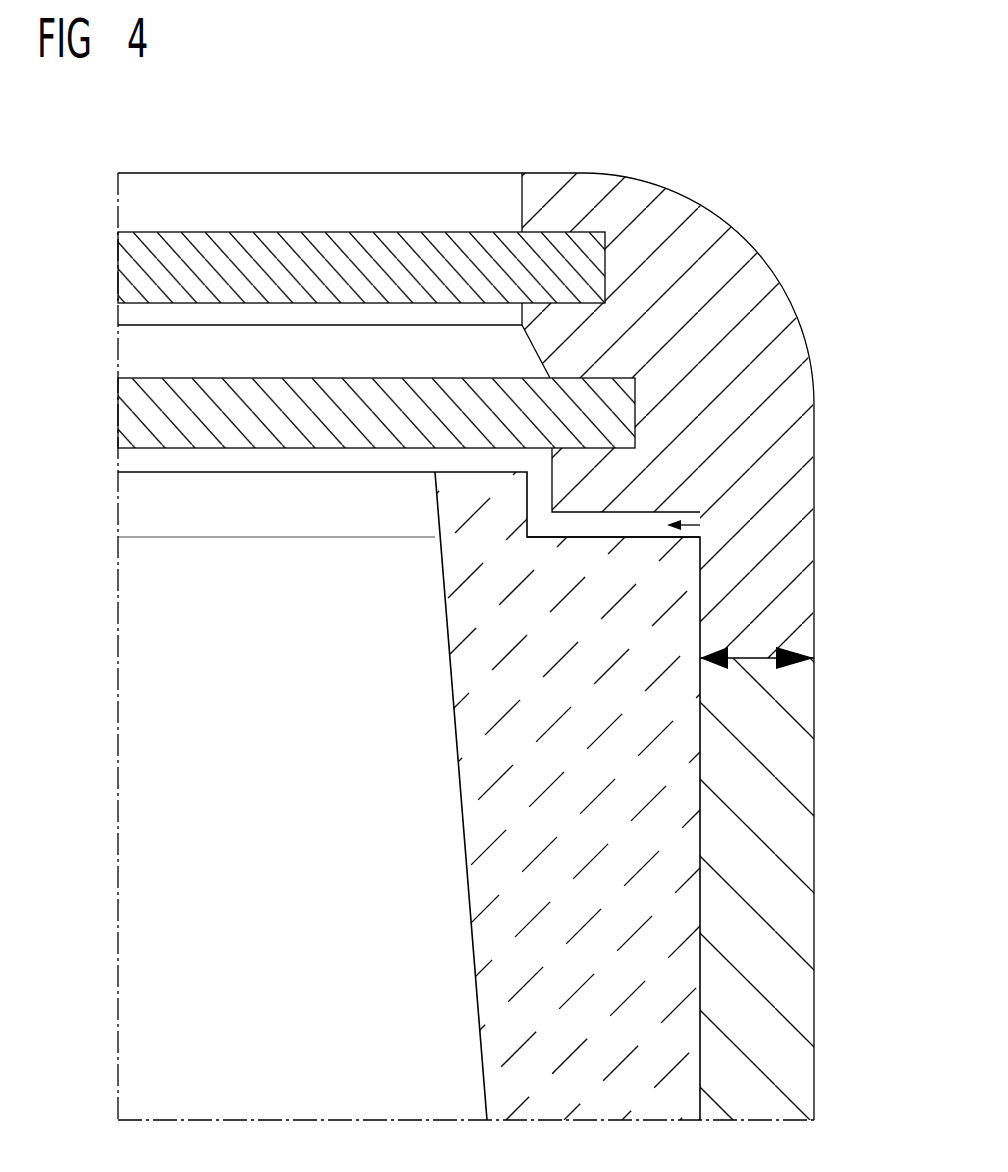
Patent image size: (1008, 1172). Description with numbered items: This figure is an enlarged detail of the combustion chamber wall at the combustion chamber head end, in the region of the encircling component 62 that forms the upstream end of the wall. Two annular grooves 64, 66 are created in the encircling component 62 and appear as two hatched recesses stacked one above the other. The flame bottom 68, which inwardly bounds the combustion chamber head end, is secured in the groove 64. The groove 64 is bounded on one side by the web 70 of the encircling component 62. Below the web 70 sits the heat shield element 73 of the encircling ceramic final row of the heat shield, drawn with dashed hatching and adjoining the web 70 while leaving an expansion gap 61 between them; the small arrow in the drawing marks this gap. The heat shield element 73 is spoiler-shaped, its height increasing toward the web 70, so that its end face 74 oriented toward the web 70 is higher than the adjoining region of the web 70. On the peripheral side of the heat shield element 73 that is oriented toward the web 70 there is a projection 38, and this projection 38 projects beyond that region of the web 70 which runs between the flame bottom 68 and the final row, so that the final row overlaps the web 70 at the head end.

The projection 38 is at (437, 507).
The expansion gap 61 is at (702, 522).
The encircling component 62 is at (730, 255).
The annular groove 64 is at (637, 388).
The annular groove 66 is at (555, 230).
The flame bottom 68 is at (248, 450).
The web 70 is at (568, 472).
The heat shield element 73 is at (475, 835).
The end face 74 is at (578, 530).